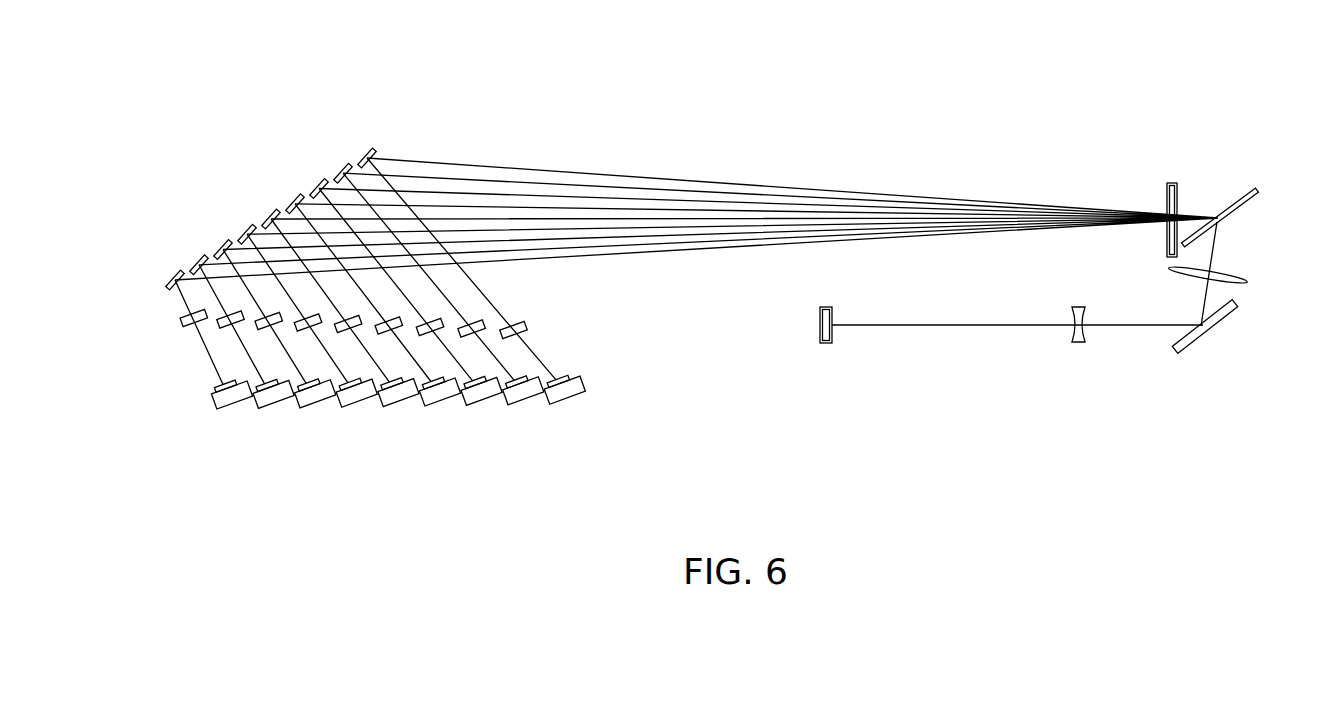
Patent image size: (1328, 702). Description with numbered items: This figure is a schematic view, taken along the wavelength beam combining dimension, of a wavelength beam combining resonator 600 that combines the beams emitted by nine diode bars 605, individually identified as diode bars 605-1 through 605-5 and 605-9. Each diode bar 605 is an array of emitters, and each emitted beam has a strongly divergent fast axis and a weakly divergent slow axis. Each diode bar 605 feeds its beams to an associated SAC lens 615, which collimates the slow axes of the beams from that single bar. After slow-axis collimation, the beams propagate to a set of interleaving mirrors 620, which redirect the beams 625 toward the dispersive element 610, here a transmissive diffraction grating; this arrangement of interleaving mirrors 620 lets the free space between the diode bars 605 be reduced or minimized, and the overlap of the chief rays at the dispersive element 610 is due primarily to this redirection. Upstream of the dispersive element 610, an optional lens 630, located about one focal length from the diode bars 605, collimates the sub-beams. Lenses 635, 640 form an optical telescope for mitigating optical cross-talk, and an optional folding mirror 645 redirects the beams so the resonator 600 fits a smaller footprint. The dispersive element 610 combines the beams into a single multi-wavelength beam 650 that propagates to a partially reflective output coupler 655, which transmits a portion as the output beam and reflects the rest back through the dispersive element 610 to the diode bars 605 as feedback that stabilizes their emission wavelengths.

The wavelength beam combining resonator 600 is at (358, 80).
The diode bar 605 is at (573, 383).
The diode bar 605-1 is at (567, 393).
The diode bar 605-5 is at (395, 394).
The diode bar 605-9 is at (233, 396).
The dispersive element 610 is at (1228, 207).
The SAC lens 615 is at (514, 323).
The interleaving mirror 620 is at (217, 243).
The beams 625 is at (588, 178).
The lens 630 is at (1167, 182).
The lens 635 is at (1238, 270).
The lens 640 is at (1080, 345).
The folding mirror 645 is at (1195, 348).
The multi-wavelength beam 650 is at (940, 326).
The partially reflective output coupler 655 is at (825, 345).